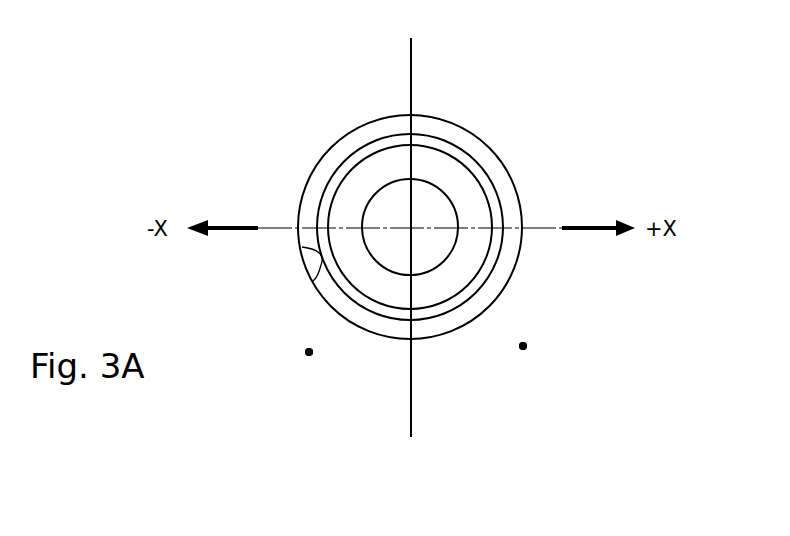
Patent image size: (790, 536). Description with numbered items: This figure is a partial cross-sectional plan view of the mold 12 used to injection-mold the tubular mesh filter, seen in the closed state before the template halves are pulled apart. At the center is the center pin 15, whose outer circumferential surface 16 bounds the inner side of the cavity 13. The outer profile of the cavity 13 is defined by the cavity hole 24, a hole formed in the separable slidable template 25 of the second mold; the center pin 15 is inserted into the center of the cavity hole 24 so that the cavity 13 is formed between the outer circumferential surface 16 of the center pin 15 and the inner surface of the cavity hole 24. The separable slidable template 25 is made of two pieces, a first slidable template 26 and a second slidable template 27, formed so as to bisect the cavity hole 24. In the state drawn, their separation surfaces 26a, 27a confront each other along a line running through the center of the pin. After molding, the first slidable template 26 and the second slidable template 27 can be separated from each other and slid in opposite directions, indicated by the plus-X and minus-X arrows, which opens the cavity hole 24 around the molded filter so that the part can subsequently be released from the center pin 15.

The mold 12 is at (545, 117).
The cavity 13 is at (458, 136).
The center pin 15 is at (369, 176).
The outer circumferential surface 16 is at (377, 305).
The cavity hole 24 is at (313, 281).
The separable slidable template 25 is at (416, 349).
The first slidable template 26 is at (309, 352).
The second slidable template 27 is at (523, 346).
The separation surface 26a is at (411, 388).
The separation surface 27a is at (411, 74).